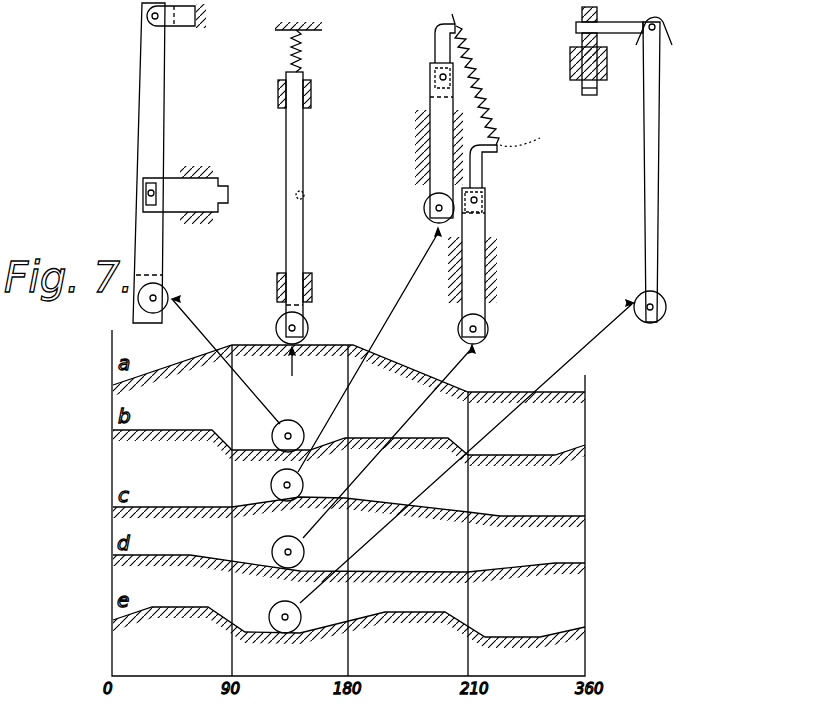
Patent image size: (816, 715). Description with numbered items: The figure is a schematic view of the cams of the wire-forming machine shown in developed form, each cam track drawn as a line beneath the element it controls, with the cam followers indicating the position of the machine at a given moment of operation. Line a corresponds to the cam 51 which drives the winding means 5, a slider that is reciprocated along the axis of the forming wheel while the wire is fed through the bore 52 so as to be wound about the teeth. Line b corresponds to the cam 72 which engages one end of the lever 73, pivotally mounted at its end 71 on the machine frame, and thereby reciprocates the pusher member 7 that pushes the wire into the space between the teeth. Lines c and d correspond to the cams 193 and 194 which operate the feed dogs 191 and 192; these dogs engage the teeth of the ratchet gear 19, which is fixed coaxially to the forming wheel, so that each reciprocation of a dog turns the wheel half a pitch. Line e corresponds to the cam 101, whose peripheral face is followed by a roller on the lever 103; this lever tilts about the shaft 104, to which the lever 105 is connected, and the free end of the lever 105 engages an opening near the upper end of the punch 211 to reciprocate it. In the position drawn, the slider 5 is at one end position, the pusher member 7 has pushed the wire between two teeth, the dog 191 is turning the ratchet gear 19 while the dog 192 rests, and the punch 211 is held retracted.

The end of lever 71 is at (150, 13).
The lever 73 is at (160, 103).
The pusher member 7 is at (228, 193).
The winding means 5 is at (303, 135).
The bore 52 is at (306, 196).
The feed dog 191 is at (435, 40).
The ratchet gear 19 is at (470, 72).
The feed dog 192 is at (487, 150).
The lever 105 is at (576, 27).
The punch 211 is at (586, 96).
The shaft 104 is at (662, 21).
The lever 103 is at (655, 258).
The cam 51 is at (349, 374).
The cam 72 is at (349, 448).
The cam 193 is at (349, 512).
The cam 194 is at (349, 564).
The cam 101 is at (349, 627).